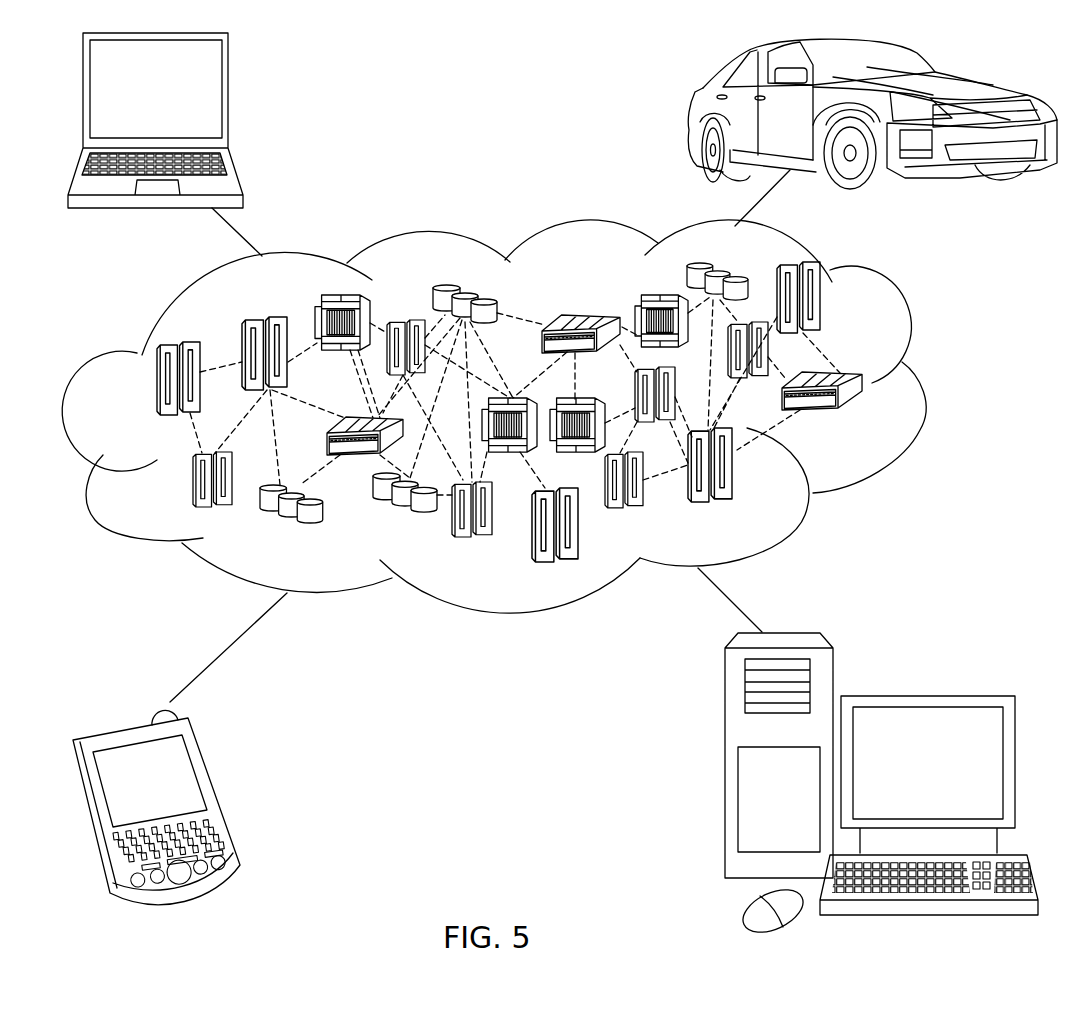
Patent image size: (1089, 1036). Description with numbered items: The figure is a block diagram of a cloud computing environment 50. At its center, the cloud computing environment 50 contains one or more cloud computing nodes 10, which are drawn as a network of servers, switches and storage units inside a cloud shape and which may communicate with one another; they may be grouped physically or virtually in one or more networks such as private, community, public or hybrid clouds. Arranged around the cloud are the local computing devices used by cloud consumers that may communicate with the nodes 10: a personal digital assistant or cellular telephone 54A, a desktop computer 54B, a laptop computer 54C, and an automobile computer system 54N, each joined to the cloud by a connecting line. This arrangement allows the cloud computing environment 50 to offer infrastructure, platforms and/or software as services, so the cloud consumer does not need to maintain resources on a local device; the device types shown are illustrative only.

The cloud computing nodes 10 is at (862, 420).
The cloud computing environment 50 is at (927, 390).
The personal digital assistant or cellular telephone 54A is at (215, 795).
The desktop computer 54B is at (925, 696).
The laptop computer 54C is at (228, 97).
The automobile computer system 54N is at (689, 117).